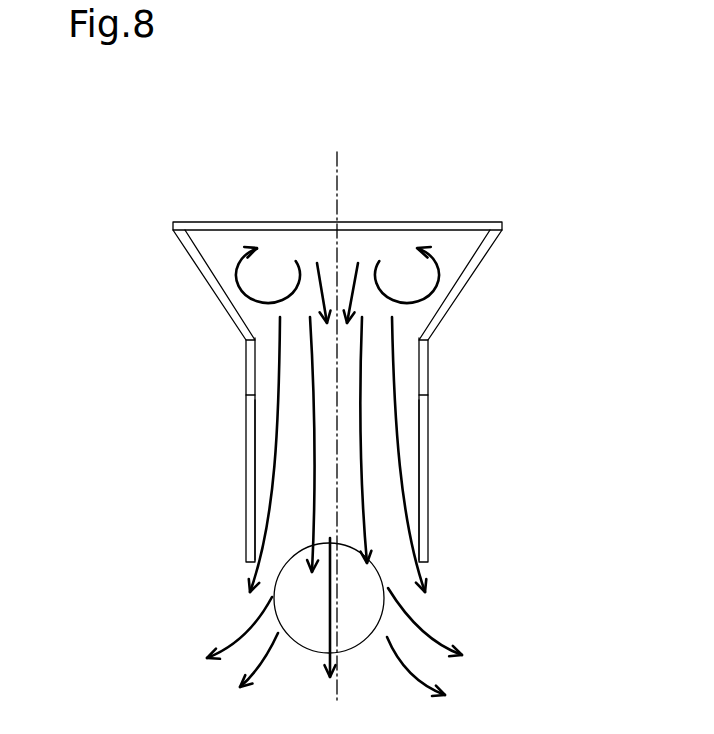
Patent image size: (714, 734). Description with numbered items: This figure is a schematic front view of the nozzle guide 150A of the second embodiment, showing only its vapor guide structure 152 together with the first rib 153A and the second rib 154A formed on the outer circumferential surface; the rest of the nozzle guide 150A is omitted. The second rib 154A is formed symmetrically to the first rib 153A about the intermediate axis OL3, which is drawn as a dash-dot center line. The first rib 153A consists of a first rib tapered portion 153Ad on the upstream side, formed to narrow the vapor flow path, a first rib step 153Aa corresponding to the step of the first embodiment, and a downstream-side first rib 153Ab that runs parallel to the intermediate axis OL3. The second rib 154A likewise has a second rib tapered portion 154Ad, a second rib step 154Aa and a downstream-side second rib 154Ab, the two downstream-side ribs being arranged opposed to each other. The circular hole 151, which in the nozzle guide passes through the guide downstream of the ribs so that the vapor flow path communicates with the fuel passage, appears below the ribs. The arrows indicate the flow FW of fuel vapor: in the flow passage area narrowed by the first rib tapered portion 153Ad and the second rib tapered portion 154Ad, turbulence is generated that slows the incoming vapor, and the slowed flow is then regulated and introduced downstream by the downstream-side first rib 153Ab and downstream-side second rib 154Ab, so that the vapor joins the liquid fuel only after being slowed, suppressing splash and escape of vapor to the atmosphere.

The nozzle guide 150A is at (321, 346).
The circular hole 151 is at (298, 627).
The vapor guide structure 152 is at (220, 222).
The first rib 153A is at (146, 396).
The first rib tapered portion 153Ad is at (238, 330).
The first rib step 153Aa is at (247, 380).
The downstream-side first rib 153Ab is at (250, 475).
The second rib 154A is at (512, 396).
The second rib tapered portion 154Ad is at (436, 328).
The second rib step 154Aa is at (428, 382).
The downstream-side second rib 154Ab is at (428, 475).
The intermediate axis OL3 is at (335, 414).
The flow of fuel vapor FW is at (417, 627).